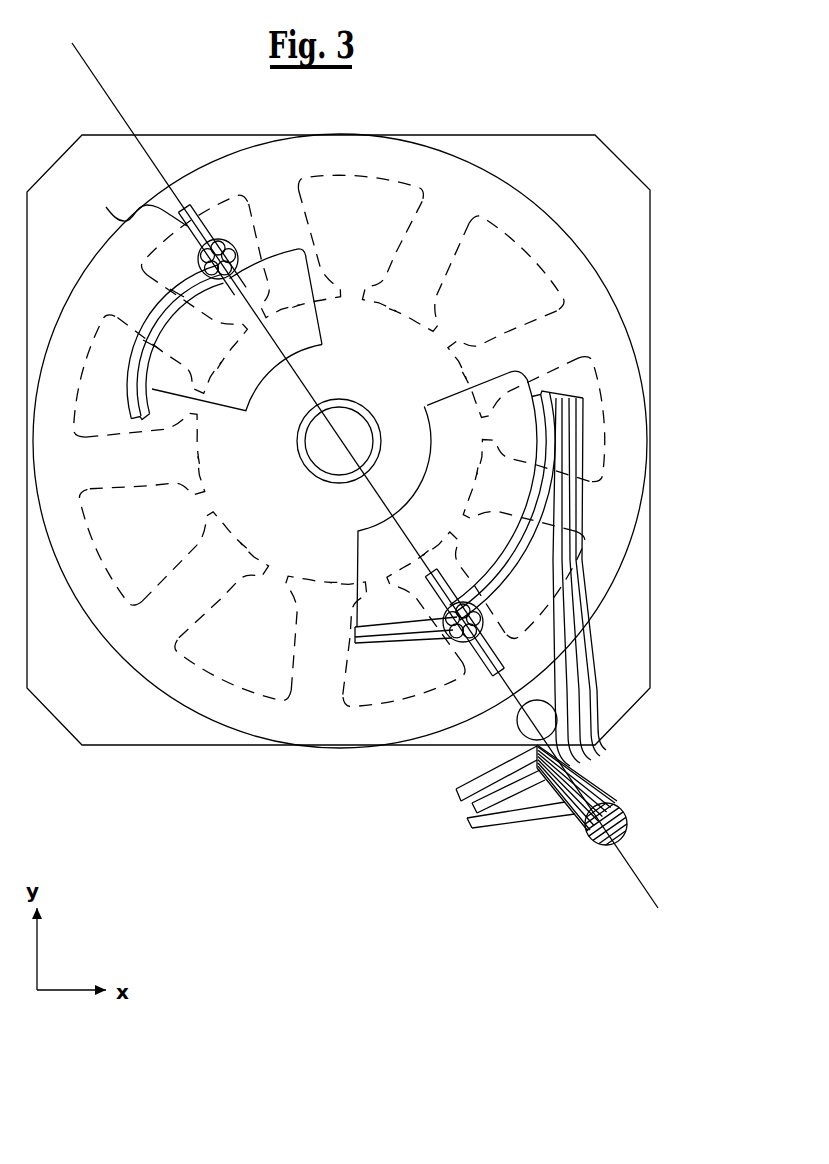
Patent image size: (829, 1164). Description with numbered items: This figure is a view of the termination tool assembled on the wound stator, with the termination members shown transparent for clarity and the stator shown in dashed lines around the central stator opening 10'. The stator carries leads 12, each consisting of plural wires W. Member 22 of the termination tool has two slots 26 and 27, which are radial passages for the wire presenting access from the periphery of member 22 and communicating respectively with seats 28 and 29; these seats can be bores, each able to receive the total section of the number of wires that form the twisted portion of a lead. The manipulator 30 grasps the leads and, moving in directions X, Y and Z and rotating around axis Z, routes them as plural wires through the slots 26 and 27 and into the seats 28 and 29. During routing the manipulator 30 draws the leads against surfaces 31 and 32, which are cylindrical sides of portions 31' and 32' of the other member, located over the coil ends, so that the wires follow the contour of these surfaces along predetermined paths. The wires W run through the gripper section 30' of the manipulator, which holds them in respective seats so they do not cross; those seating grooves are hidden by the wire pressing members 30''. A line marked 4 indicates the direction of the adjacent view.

The view direction 4 is at (71, 59).
The stator center 10' is at (347, 427).
The lead 12 is at (643, 659).
The termination tool member 22 is at (447, 172).
The slot 26 is at (495, 633).
The slot 27 is at (162, 246).
The seat 28 is at (450, 641).
The seat 29 is at (226, 250).
The manipulator 30 is at (561, 788).
The gripper section 30' is at (624, 804).
The wire pressing member 30'' is at (599, 781).
The surface 31 is at (530, 552).
The portion of member 23 31' is at (446, 507).
The surface 32 is at (224, 316).
The portion of member 23 32' is at (237, 400).
The wires W is at (452, 790).